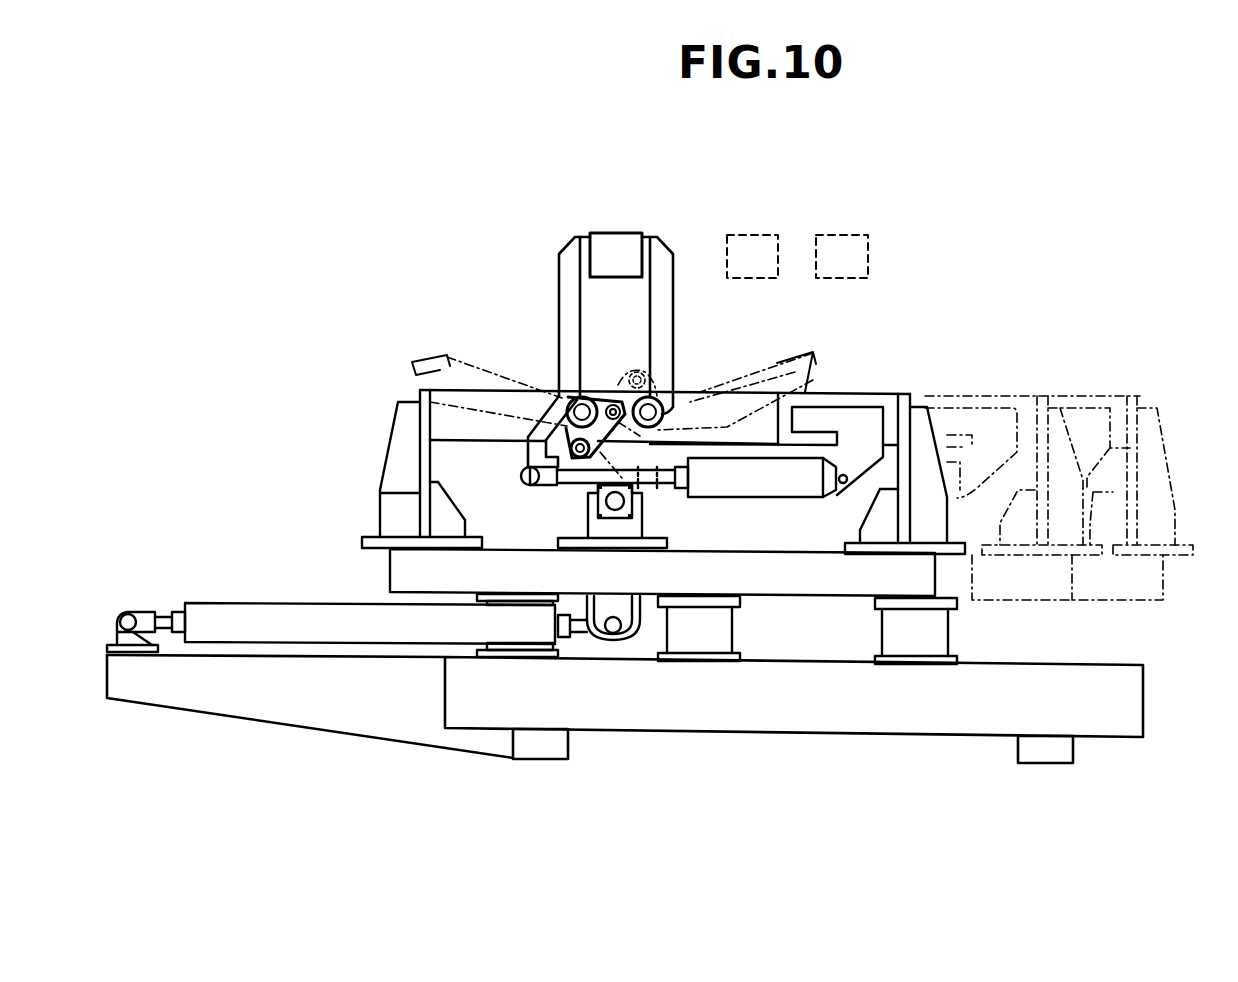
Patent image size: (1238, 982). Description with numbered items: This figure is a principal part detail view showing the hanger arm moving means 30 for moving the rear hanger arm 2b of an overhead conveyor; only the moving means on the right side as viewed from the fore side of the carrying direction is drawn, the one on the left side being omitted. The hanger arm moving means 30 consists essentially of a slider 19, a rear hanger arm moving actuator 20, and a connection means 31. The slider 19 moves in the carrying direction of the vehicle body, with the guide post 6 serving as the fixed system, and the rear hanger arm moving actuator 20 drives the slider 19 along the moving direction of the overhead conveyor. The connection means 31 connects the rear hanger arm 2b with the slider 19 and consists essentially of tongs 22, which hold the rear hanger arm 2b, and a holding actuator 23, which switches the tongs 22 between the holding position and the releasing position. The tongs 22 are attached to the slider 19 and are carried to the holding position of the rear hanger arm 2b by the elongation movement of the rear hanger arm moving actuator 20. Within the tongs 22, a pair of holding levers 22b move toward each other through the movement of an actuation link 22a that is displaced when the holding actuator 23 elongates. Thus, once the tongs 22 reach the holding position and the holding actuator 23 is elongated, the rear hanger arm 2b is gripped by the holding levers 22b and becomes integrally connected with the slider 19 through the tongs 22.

The rear hanger arm 2b is at (617, 243).
The guide post 6 is at (1093, 687).
The slider 19 is at (410, 573).
The rear hanger arm moving actuator 20 is at (320, 620).
The tongs 22 is at (555, 301).
The actuation link 22a is at (609, 392).
The holding lever 22b is at (657, 295).
The holding actuator 23 is at (738, 497).
The hanger arm moving means 30 is at (192, 447).
The connection means 31 is at (272, 412).